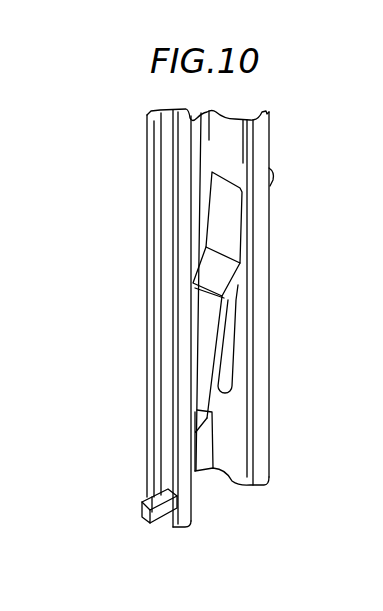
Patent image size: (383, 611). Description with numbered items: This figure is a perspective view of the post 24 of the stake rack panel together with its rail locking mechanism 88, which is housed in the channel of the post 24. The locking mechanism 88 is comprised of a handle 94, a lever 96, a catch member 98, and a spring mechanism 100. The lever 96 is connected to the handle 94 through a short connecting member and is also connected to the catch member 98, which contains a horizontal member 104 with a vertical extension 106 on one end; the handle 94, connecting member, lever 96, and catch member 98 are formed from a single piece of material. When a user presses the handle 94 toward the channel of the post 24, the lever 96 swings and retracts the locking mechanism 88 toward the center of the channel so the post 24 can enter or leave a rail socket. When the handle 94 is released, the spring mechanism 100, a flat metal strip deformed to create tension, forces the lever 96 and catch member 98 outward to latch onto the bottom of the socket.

The post 24 is at (265, 413).
The rail locking mechanism 88 is at (140, 304).
The handle 94 is at (270, 175).
The lever 96 is at (203, 482).
The catch member 98 is at (150, 518).
The spring mechanism 100 is at (212, 333).
The horizontal member 104 is at (167, 518).
The vertical extension 106 is at (138, 505).